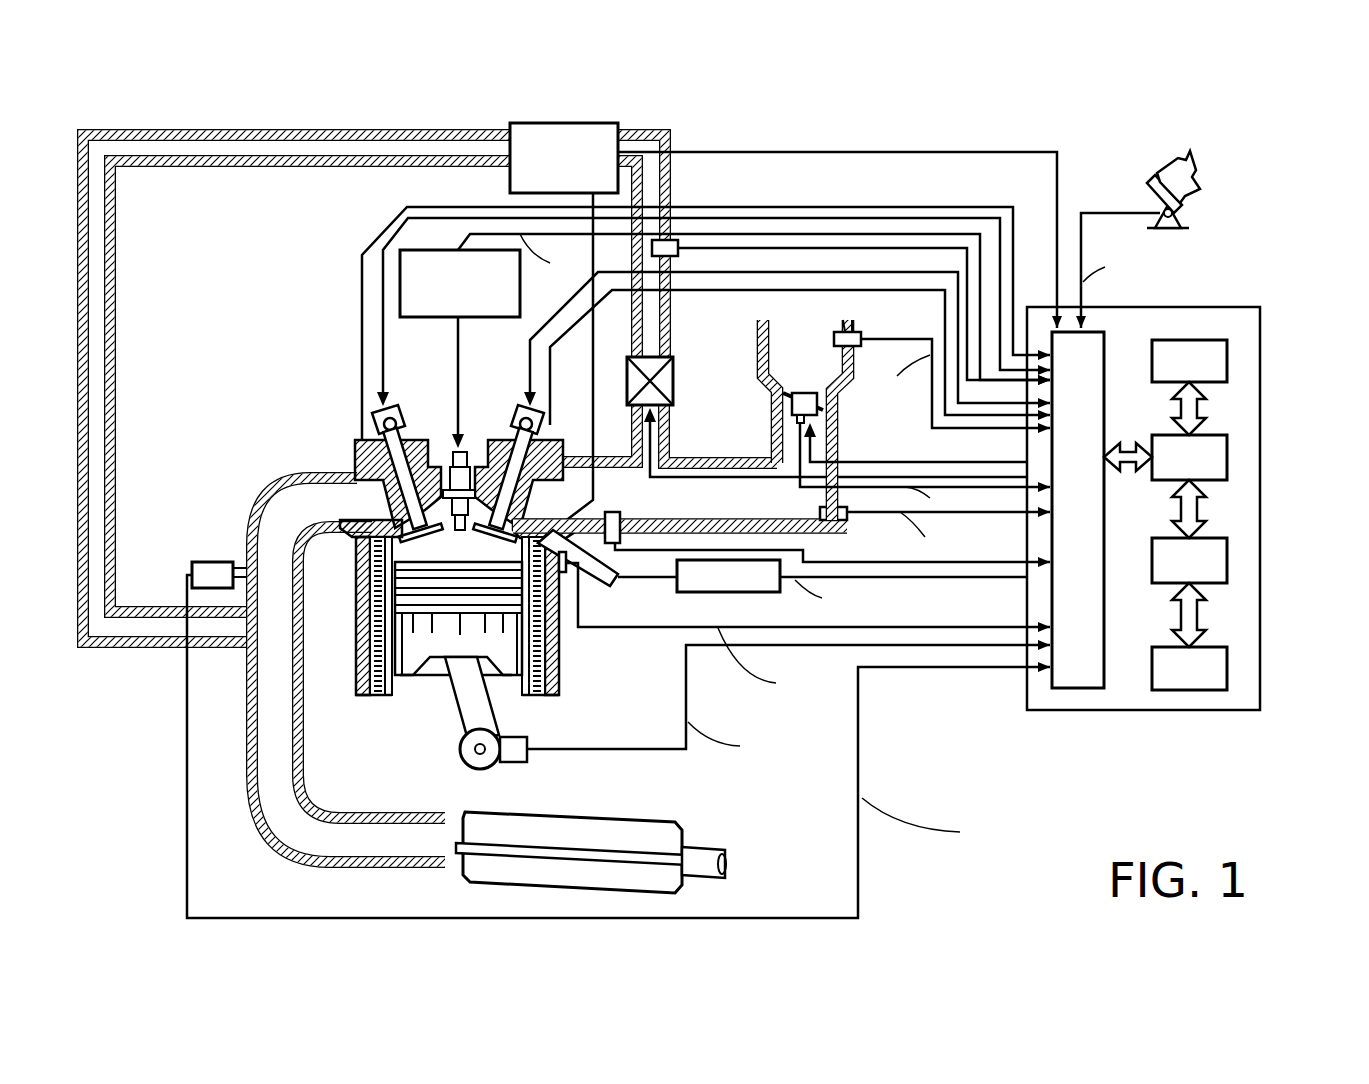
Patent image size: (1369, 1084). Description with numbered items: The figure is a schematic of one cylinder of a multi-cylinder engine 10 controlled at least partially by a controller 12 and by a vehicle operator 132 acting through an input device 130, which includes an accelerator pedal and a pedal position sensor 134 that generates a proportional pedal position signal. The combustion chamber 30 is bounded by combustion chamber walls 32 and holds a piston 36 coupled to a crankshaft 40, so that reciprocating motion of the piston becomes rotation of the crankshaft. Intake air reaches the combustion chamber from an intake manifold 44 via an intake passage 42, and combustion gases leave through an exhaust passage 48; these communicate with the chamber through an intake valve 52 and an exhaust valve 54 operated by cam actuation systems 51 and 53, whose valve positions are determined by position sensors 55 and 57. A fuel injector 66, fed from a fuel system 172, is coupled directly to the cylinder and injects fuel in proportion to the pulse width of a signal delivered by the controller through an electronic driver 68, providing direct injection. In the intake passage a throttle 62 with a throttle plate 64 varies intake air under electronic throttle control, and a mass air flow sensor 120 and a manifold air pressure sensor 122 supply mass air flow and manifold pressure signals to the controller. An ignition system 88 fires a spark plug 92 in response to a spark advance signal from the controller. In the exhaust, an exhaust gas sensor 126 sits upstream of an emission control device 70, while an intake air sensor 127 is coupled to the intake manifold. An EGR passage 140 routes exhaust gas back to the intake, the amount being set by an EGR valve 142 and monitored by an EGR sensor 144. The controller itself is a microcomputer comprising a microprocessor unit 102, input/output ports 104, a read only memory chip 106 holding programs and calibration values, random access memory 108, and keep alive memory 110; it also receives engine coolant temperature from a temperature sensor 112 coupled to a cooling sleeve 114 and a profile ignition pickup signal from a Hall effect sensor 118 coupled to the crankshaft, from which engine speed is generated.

The engine 10 is at (290, 387).
The controller 12 is at (1190, 494).
The combustion chamber 30 is at (362, 653).
The combustion chamber walls 32 is at (400, 682).
The piston 36 is at (447, 660).
The crankshaft 40 is at (470, 768).
The intake passage 42 is at (815, 364).
The intake manifold 44 is at (750, 506).
The exhaust passage 48 is at (338, 511).
The cam actuation system 51 is at (520, 408).
The intake valve 52 is at (500, 506).
The cam actuation system 53 is at (400, 408).
The exhaust valve 54 is at (375, 478).
The position sensor 55 is at (540, 428).
The position sensor 57 is at (370, 426).
The throttle 62 is at (815, 398).
The throttle plate 64 is at (792, 400).
The fuel injector 66 is at (590, 552).
The electronic driver 68 is at (700, 592).
The emission control device 70 is at (645, 815).
The ignition system 88 is at (410, 250).
The spark plug 92 is at (462, 452).
The microprocessor unit 102 is at (1228, 455).
The input/output ports 104 is at (1108, 338).
The read only memory chip 106 is at (1228, 358).
The random access memory 108 is at (1228, 560).
The keep alive memory 110 is at (1228, 668).
The temperature sensor 112 is at (578, 568).
The cooling sleeve 114 is at (545, 647).
The Hall effect sensor 118 is at (515, 765).
The mass air flow sensor 120 is at (853, 330).
The manifold air pressure sensor 122 is at (843, 520).
The exhaust gas sensor 126 is at (192, 565).
The intake air sensor 127 is at (617, 512).
The input device 130 is at (1203, 234).
The vehicle operator 132 is at (1200, 178).
The pedal position sensor 134 is at (1195, 215).
The EGR passage 140 is at (370, 130).
The EGR valve 142 is at (673, 380).
The EGR sensor 144 is at (678, 257).
The fuel system 172 is at (572, 123).